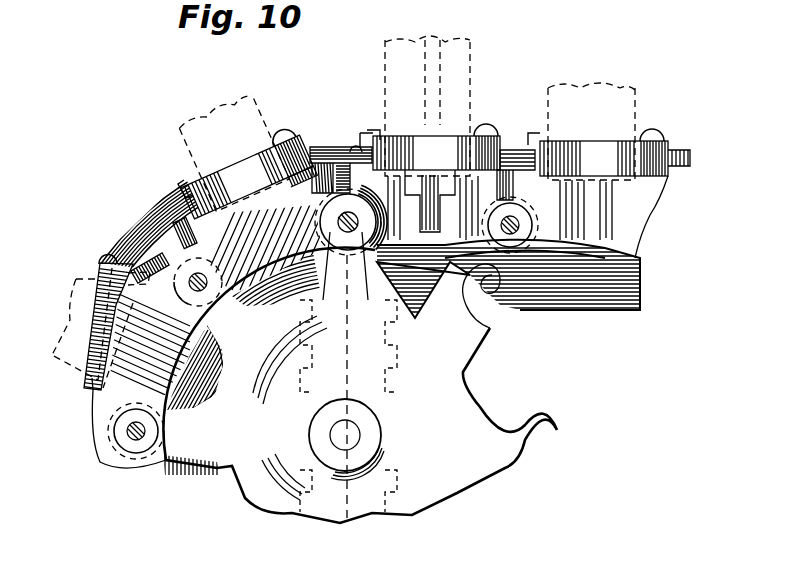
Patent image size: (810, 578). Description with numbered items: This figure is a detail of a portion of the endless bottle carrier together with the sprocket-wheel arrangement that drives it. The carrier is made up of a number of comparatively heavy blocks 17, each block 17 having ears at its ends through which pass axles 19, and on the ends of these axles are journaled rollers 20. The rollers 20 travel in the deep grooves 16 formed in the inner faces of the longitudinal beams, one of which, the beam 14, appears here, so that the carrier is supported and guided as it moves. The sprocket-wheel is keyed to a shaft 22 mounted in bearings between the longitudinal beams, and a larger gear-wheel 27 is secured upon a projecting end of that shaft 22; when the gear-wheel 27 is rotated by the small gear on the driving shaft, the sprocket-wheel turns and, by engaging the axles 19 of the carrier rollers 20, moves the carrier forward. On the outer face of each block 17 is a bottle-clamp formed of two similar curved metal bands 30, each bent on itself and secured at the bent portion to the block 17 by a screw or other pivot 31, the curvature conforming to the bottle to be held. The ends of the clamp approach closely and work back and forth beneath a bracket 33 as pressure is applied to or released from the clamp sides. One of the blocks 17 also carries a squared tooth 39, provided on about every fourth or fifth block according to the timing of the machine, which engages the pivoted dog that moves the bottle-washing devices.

The longitudinal beam 14 is at (624, 290).
The groove 16 is at (605, 257).
The block 17 is at (132, 495).
The axle 19 is at (190, 416).
The roller 20 is at (230, 332).
The shaft 22 is at (355, 438).
The larger gear-wheel 27 is at (360, 385).
The curved metal band 30 is at (385, 264).
The screw or pivot 31 is at (97, 245).
The bracket 33 is at (560, 120).
The squared tooth 39 is at (476, 182).